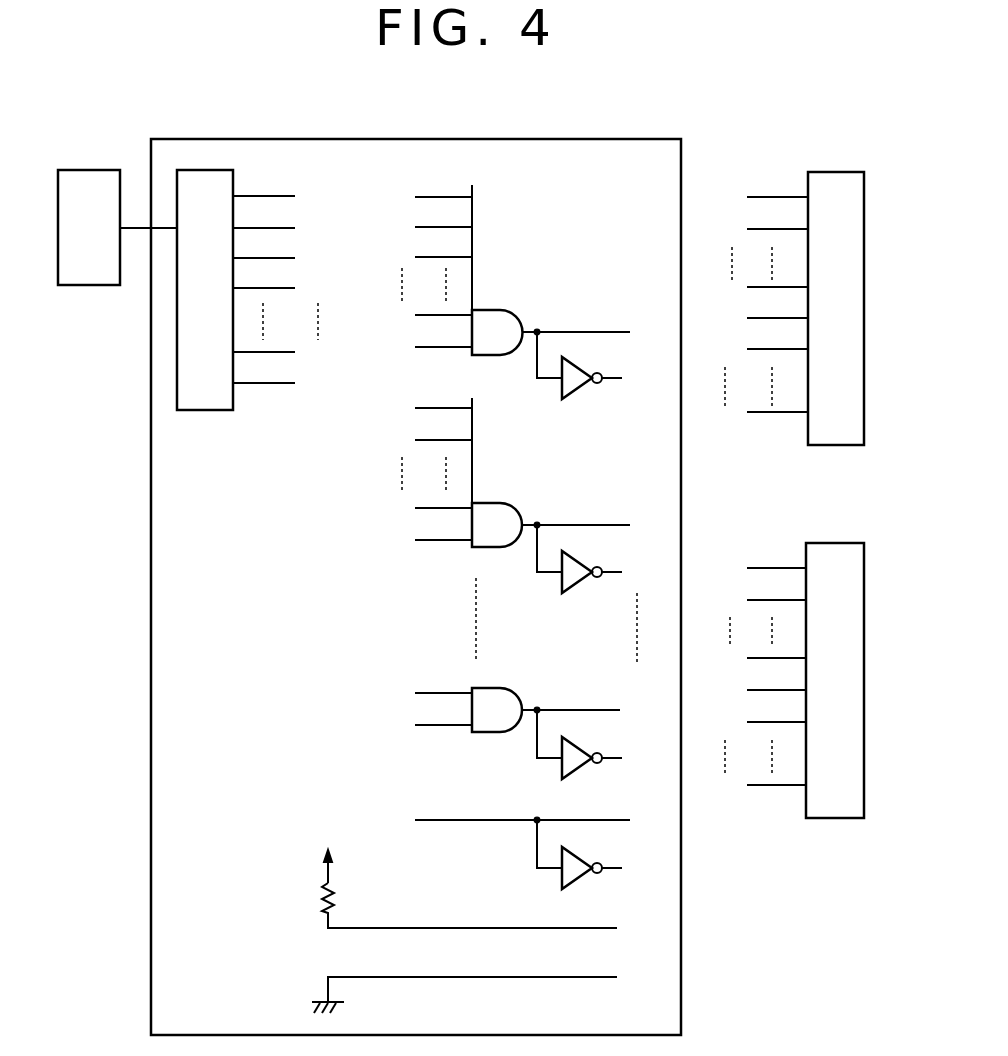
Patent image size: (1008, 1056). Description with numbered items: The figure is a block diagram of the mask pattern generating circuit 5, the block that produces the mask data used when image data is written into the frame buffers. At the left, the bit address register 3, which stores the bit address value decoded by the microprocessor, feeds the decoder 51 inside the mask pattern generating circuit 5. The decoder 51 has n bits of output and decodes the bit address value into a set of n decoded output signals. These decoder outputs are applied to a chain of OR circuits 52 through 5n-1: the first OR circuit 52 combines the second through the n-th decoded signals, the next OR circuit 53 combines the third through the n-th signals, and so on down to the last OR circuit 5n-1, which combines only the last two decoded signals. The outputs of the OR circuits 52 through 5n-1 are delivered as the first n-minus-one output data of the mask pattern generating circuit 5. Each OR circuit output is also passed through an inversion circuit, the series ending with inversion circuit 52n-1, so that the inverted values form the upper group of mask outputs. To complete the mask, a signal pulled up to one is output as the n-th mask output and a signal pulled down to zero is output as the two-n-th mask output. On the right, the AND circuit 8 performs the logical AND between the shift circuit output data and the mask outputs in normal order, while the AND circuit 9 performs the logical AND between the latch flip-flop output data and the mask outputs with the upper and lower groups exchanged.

The bit address register 3 is at (78, 170).
The mask pattern generating circuit 5 is at (545, 139).
The decoder 51 is at (200, 170).
The OR circuit 52 is at (495, 310).
The OR circuit 53 is at (495, 503).
The OR circuit 5n-1 is at (495, 688).
The inversion circuit 52n-1 is at (578, 772).
The AND circuit 8 is at (825, 172).
The AND circuit 9 is at (822, 543).